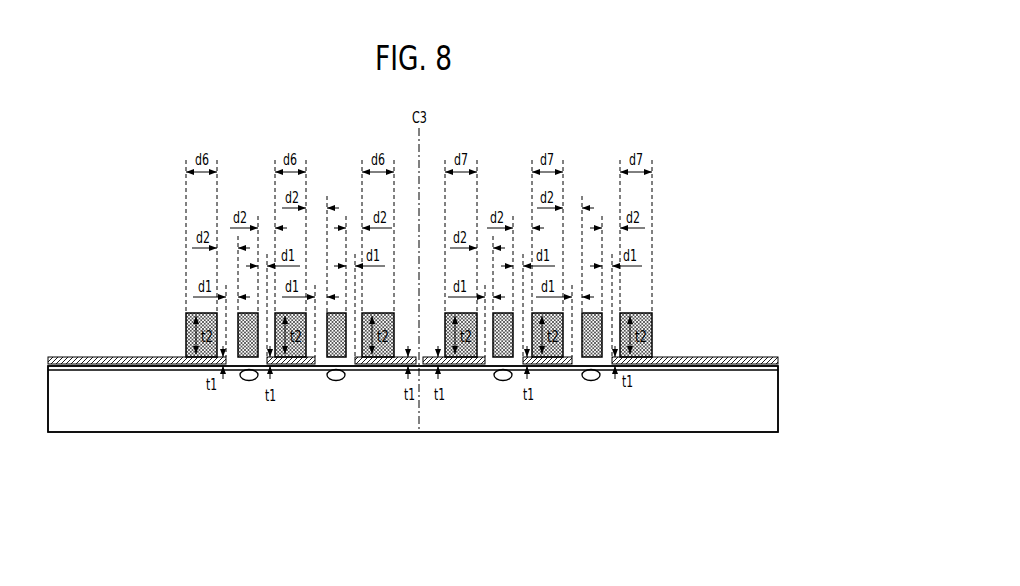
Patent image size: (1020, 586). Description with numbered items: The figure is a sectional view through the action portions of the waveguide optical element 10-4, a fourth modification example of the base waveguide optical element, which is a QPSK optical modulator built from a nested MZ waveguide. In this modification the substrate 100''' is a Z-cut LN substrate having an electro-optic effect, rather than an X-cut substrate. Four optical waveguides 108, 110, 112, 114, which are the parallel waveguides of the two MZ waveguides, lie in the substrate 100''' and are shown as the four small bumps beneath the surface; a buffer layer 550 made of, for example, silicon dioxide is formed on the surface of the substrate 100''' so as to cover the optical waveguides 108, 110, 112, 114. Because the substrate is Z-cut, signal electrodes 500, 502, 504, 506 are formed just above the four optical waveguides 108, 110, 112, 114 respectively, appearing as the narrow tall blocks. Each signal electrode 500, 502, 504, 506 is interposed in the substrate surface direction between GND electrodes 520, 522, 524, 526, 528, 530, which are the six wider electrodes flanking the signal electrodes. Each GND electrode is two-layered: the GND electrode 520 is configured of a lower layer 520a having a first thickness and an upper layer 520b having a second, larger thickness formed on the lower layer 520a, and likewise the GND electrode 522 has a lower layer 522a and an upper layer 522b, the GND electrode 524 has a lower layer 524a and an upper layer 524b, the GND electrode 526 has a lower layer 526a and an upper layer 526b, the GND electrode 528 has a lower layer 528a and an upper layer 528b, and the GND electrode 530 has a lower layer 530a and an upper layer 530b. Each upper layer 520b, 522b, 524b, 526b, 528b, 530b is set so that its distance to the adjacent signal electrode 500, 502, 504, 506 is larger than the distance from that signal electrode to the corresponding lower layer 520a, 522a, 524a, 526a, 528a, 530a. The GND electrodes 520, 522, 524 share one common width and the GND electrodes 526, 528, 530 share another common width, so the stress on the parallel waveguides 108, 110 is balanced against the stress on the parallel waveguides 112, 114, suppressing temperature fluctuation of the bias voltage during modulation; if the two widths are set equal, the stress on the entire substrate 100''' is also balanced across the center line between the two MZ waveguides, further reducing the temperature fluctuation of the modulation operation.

The waveguide optical element 10-4 is at (95, 189).
The buffer layer 550 is at (444, 386).
The substrate 100''' is at (439, 431).
The GND electrode 520 is at (137, 306).
The lower layer 520a is at (137, 328).
The upper layer 520b is at (165, 315).
The GND electrode 522 is at (261, 431).
The lower layer 522a is at (266, 428).
The upper layer 522b is at (276, 419).
The GND electrode 524 is at (381, 446).
The lower layer 524a is at (383, 445).
The upper layer 524b is at (393, 433).
The GND electrode 526 is at (480, 443).
The lower layer 526a is at (455, 451).
The upper layer 526b is at (484, 420).
The GND electrode 528 is at (600, 429).
The lower layer 528a is at (568, 442).
The upper layer 528b is at (592, 411).
The GND electrode 530 is at (695, 307).
The lower layer 530a is at (695, 328).
The upper layer 530b is at (669, 315).
The signal electrode 500 is at (192, 396).
The signal electrode 502 is at (316, 403).
The signal electrode 504 is at (533, 403).
The signal electrode 506 is at (644, 392).
The optical waveguide 108 is at (206, 437).
The optical waveguide 110 is at (337, 440).
The optical waveguide 112 is at (511, 429).
The optical waveguide 114 is at (630, 430).